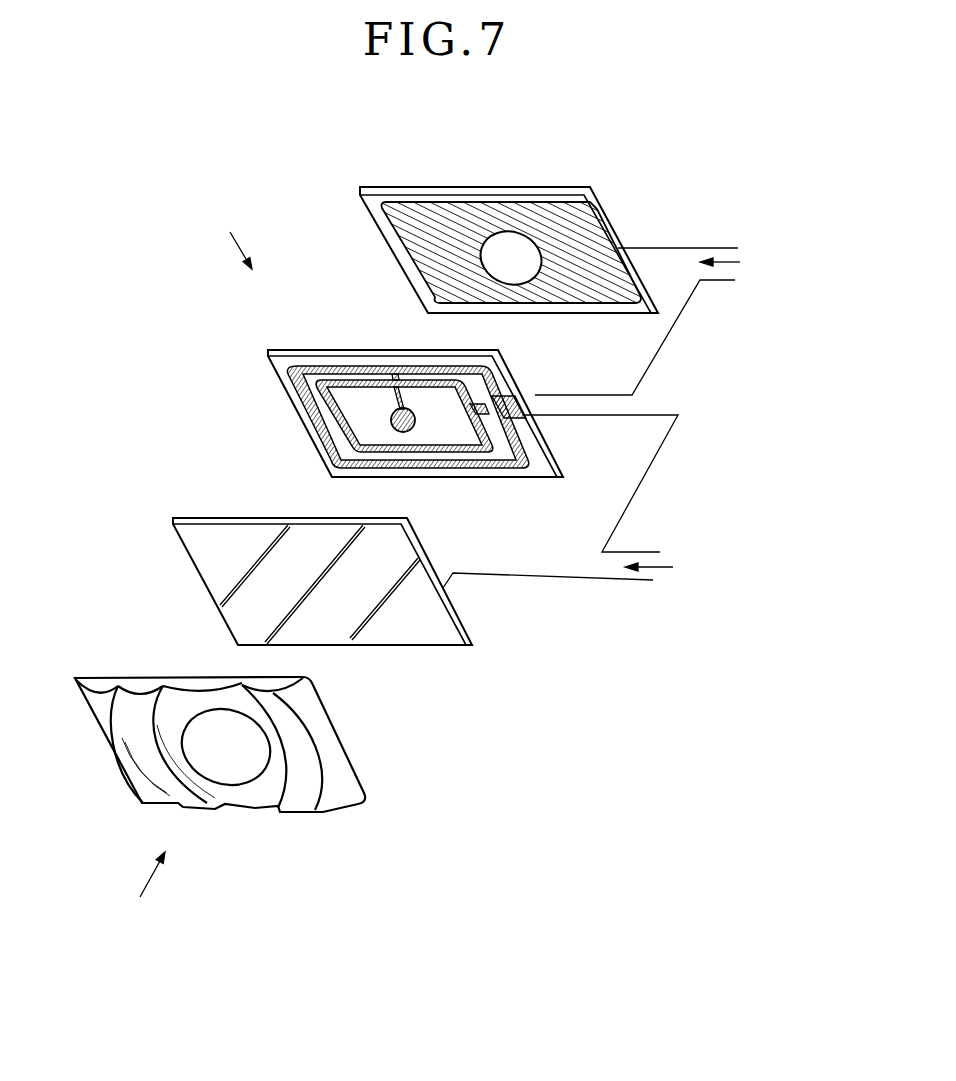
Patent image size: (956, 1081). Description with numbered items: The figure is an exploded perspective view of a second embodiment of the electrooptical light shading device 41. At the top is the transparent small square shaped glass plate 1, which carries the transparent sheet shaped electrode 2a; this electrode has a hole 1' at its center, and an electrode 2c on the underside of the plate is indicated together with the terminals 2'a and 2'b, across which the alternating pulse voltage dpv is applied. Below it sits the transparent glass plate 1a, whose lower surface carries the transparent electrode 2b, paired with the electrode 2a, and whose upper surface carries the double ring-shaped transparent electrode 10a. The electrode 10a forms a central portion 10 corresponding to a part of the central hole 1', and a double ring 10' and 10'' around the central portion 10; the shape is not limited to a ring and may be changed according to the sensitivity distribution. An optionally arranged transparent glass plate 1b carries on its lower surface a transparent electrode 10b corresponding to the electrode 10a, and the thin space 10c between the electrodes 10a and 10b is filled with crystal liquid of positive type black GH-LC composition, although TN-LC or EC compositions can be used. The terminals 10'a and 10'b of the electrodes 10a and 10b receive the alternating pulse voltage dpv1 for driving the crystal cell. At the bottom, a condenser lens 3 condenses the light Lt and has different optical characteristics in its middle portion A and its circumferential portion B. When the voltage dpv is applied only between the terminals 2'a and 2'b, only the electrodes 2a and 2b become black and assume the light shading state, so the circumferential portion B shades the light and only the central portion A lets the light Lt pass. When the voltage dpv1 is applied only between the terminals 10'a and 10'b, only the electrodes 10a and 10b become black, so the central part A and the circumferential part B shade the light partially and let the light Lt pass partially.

The transparent glass plate 1 is at (509, 213).
The transparent sheet shaped electrode 2a is at (417, 208).
The hole 1' is at (511, 214).
The electrode on underside of upper plate 2c is at (433, 330).
The terminal 2'a is at (678, 223).
The terminal 2'b is at (635, 337).
The alternating pulse voltage dpv is at (736, 263).
The transparent glass plate 1a is at (268, 352).
The transparent electrode 2b is at (321, 349).
The double ring-shaped transparent electrode 10a is at (297, 385).
The central portion 10 is at (416, 449).
The ring 10' is at (511, 379).
The ring 10'' is at (516, 467).
The thin space 10c is at (338, 493).
The terminal 10'a is at (601, 483).
The terminal 10'b is at (548, 605).
The alternating pulse voltage dpv1 is at (670, 567).
The transparent glass plate 1b is at (173, 518).
The transparent electrode 10b is at (232, 517).
The condenser lens 3 is at (87, 693).
The middle portion A is at (237, 778).
The circumferential portion B is at (300, 800).
The light Lt is at (147, 890).
The electrooptical light shading device 41 is at (231, 239).